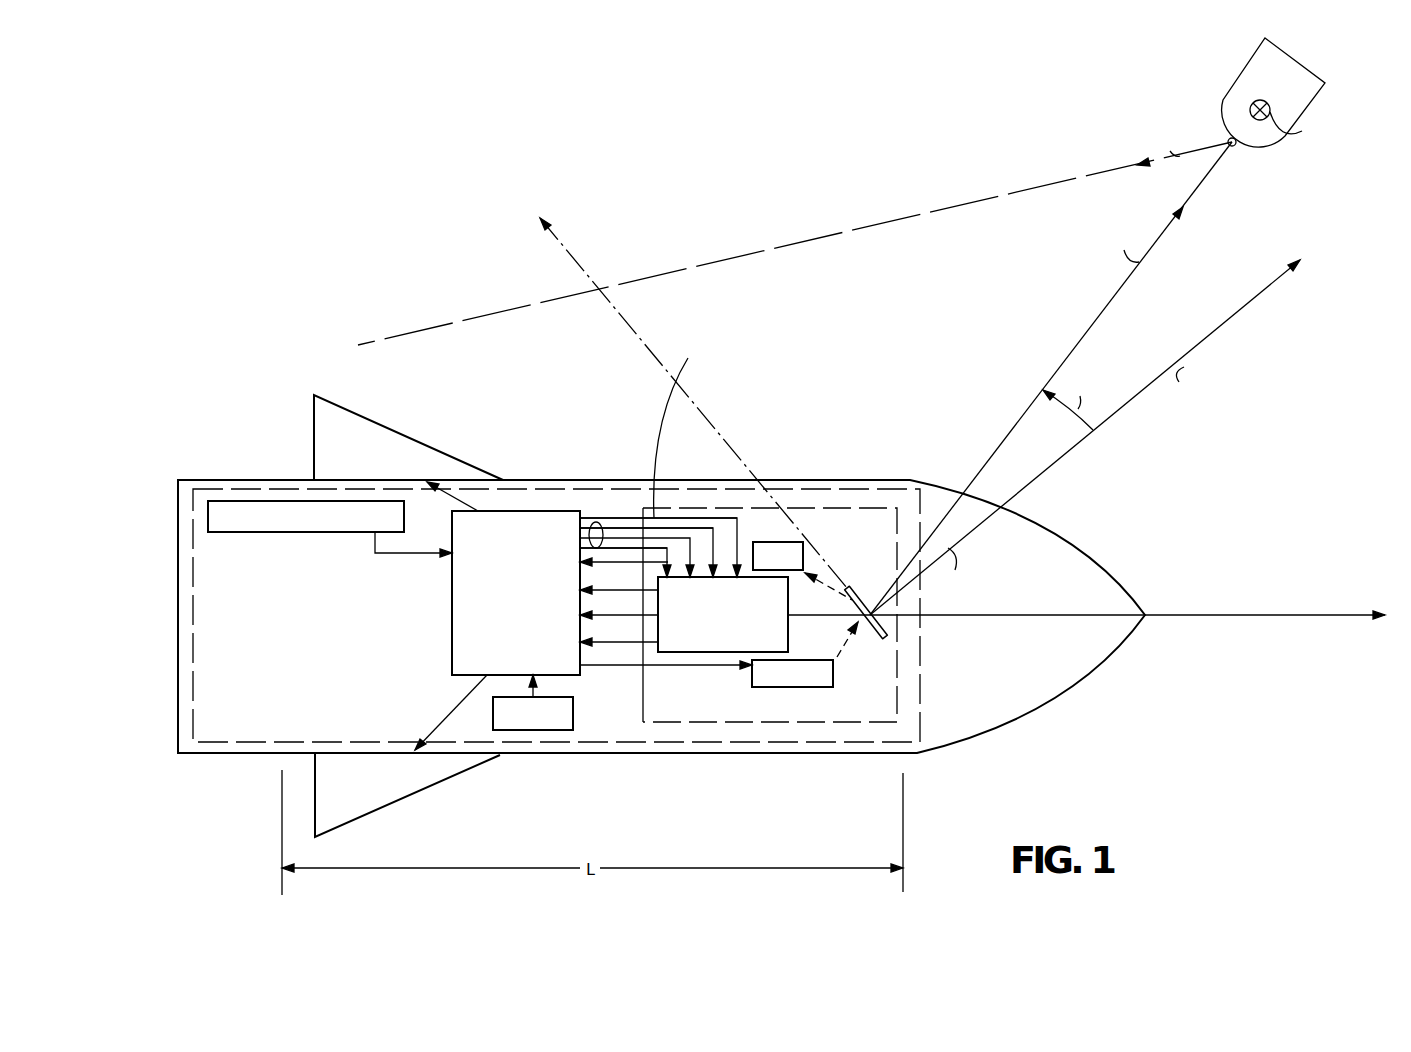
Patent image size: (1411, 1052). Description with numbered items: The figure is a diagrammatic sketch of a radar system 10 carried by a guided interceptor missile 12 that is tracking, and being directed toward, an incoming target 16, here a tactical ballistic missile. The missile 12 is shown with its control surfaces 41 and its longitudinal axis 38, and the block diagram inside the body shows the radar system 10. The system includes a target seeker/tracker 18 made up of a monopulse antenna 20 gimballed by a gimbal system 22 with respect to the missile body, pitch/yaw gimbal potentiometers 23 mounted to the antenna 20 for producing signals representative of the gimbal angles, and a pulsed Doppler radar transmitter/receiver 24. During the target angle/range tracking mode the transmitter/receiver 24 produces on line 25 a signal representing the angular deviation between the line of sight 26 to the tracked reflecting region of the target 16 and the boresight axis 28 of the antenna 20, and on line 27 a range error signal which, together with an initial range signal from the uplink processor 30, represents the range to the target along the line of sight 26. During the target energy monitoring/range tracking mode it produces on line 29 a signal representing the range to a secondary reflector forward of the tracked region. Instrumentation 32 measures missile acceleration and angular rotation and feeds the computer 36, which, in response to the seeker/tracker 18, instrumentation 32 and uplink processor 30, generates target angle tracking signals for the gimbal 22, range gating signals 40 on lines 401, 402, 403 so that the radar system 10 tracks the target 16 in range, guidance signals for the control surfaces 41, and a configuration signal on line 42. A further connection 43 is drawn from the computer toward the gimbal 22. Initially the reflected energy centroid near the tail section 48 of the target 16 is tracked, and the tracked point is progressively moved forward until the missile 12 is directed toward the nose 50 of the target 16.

The radar system 10 is at (547, 487).
The guided interceptor missile 12 is at (811, 479).
The target 16 is at (843, 190).
The target seeker/tracker 18 is at (897, 688).
The monopulse antenna 20 is at (884, 630).
The gimbal system 22 is at (800, 660).
The pitch/yaw gimbal potentiometers 23 is at (805, 555).
The radar transmitter/receiver 24 is at (788, 600).
The line 25 is at (617, 590).
The line of sight 26 is at (1152, 246).
The line 27 is at (648, 590).
The boresight axis 28 is at (1247, 304).
The line 29 is at (632, 665).
The uplink processor 30 is at (574, 699).
The instrumentation 32 is at (304, 532).
The computer 36 is at (532, 560).
The longitudinal axis 38 is at (1296, 616).
The range gating signals 40 is at (604, 525).
The line 401 is at (590, 522).
The line 402 is at (628, 535).
The line 403 is at (641, 543).
The control surfaces 41 is at (400, 430).
The line 42 is at (852, 399).
The gimbal command line 43 is at (653, 660).
The tail section 48 is at (1248, 64).
The nose 50 is at (804, 239).